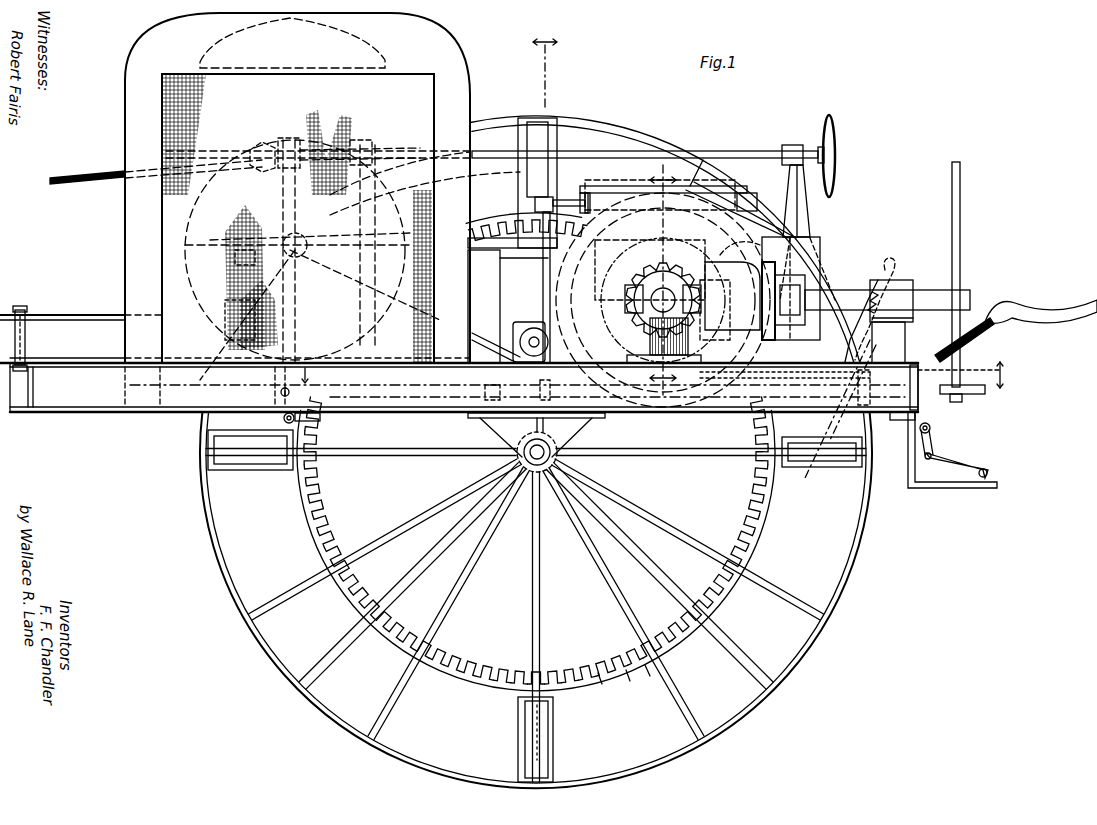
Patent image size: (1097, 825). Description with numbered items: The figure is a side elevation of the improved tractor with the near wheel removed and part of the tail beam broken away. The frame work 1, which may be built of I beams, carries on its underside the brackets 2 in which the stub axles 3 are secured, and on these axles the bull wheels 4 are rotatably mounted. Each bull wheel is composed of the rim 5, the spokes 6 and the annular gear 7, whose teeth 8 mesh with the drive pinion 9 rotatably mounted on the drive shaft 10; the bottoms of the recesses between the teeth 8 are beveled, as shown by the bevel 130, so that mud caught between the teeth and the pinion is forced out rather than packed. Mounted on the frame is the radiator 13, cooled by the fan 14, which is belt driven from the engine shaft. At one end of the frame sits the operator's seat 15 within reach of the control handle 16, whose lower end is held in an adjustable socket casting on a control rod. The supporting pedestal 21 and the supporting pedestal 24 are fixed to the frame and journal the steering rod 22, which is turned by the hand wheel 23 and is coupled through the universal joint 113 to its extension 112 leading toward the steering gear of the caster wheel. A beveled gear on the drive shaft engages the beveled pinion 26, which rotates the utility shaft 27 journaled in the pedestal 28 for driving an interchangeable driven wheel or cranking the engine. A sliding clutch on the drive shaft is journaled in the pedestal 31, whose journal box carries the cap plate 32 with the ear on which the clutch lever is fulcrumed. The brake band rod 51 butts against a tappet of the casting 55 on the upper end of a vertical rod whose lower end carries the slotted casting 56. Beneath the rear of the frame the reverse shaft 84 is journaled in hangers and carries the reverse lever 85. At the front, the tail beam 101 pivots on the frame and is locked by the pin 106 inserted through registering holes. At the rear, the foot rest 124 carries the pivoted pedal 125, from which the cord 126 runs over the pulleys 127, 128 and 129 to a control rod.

The frame work 1 is at (97, 368).
The brackets 2 is at (552, 447).
The stub axles 3 is at (470, 466).
The bull wheels 4 is at (838, 235).
The rim 5 is at (858, 582).
The spokes 6 is at (596, 553).
The annular gear 7 is at (663, 287).
The teeth 8 is at (758, 478).
The drive pinion 9 is at (640, 308).
The drive shaft 10 is at (670, 295).
The radiator 13 is at (438, 55).
The fan 14 is at (228, 195).
The operator's seat 15 is at (1035, 312).
The control handle 16 is at (962, 190).
The supporting pedestal 21 is at (806, 210).
The steering rod 22 is at (752, 150).
The hand wheel 23 is at (834, 135).
The supporting pedestal 24 is at (372, 210).
The beveled pinion 26 is at (812, 275).
The utility shaft 27 is at (968, 300).
The pedestal 28 is at (908, 337).
The pedestal 31 is at (695, 318).
The cap plate 32 is at (622, 287).
The rod 51 is at (540, 250).
The casting 55 is at (553, 200).
The slotted casting 56 is at (500, 425).
The reverse shaft 84 is at (818, 470).
The reverse lever 85 is at (890, 262).
The tail beam 101 is at (70, 325).
The pin 106 is at (22, 312).
The extension 112 is at (100, 175).
The universal joint 113 is at (298, 132).
The foot rest 124 is at (940, 488).
The pedal 125 is at (1000, 468).
The cord 126 is at (932, 430).
The pulley 127 is at (922, 432).
The pulley 128 is at (282, 418).
The pulley 129 is at (278, 392).
The bevel 130 is at (648, 667).